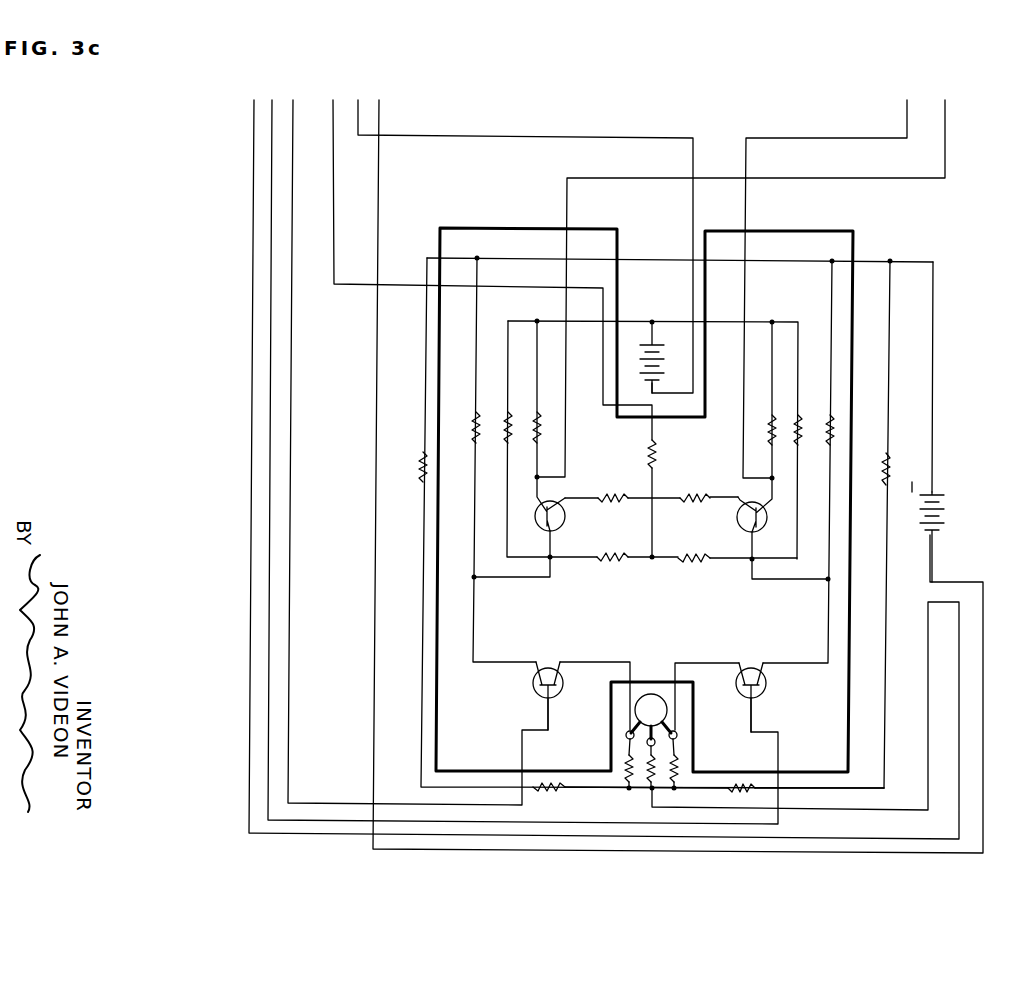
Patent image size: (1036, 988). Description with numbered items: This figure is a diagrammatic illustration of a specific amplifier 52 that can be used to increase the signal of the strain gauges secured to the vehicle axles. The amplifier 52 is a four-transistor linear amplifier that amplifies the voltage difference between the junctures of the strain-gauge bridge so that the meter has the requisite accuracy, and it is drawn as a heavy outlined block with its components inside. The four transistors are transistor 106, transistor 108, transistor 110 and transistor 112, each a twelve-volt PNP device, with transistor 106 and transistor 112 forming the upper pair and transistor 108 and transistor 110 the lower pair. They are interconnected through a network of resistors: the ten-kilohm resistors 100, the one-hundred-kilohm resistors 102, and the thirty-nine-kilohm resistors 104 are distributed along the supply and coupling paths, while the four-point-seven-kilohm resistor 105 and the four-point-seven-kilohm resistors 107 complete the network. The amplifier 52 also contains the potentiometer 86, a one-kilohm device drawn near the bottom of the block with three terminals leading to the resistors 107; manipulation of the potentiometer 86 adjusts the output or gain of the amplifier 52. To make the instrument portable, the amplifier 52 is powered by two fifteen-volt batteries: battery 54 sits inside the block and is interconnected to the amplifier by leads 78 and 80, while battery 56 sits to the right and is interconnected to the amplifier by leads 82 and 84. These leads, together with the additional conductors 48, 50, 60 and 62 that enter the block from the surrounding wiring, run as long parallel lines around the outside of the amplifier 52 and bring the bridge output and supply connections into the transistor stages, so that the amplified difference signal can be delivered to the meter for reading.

The conductor 48 is at (288, 626).
The conductor 50 is at (268, 540).
The amplifier 52 is at (857, 236).
The battery 54 is at (642, 350).
The battery 56 is at (946, 505).
The conductor 60 is at (945, 168).
The conductor 62 is at (822, 138).
The lead 78 is at (254, 270).
The lead 80 is at (373, 559).
The lead 82 is at (510, 135).
The lead 84 is at (334, 150).
The potentiometer 86 is at (653, 694).
The resistors 100 is at (474, 420).
The resistors 102 is at (506, 414).
The resistors 104 is at (610, 561).
The resistor 105 is at (648, 456).
The transistor 106 is at (538, 518).
The resistors 107 is at (672, 771).
The transistor 108 is at (552, 668).
The transistor 110 is at (753, 668).
The transistor 112 is at (764, 524).